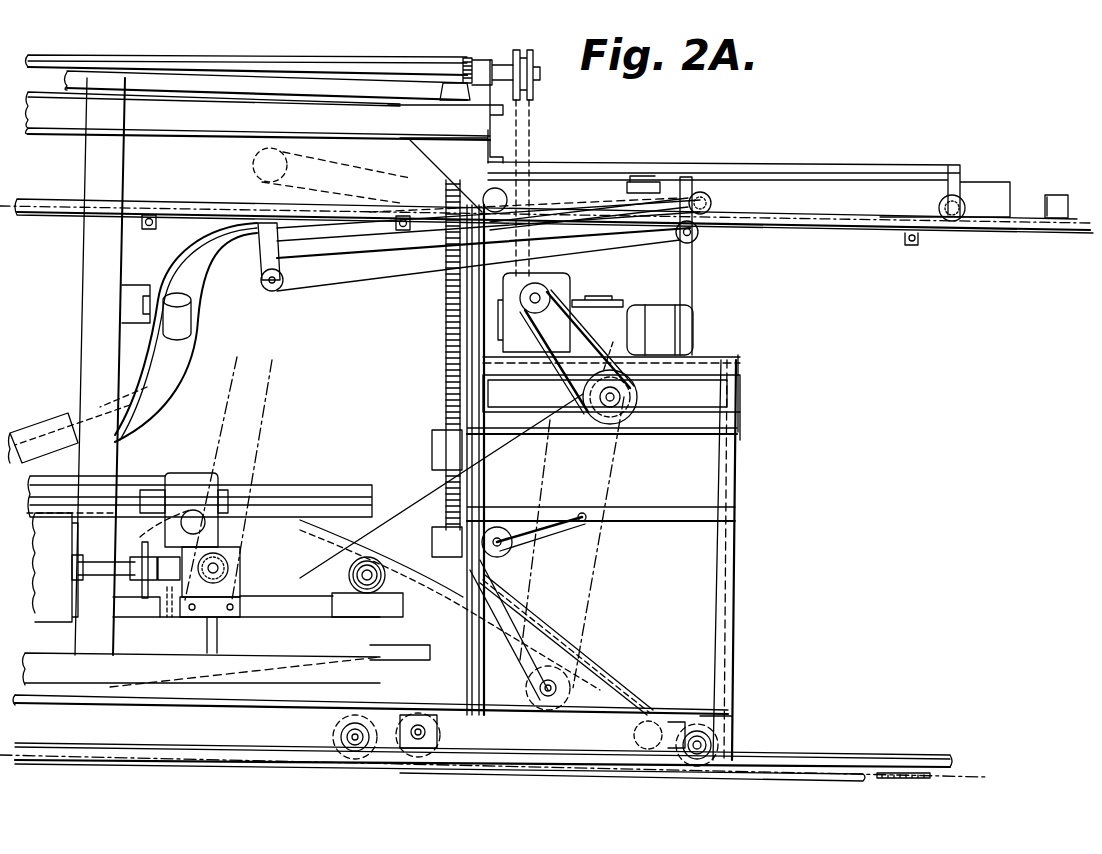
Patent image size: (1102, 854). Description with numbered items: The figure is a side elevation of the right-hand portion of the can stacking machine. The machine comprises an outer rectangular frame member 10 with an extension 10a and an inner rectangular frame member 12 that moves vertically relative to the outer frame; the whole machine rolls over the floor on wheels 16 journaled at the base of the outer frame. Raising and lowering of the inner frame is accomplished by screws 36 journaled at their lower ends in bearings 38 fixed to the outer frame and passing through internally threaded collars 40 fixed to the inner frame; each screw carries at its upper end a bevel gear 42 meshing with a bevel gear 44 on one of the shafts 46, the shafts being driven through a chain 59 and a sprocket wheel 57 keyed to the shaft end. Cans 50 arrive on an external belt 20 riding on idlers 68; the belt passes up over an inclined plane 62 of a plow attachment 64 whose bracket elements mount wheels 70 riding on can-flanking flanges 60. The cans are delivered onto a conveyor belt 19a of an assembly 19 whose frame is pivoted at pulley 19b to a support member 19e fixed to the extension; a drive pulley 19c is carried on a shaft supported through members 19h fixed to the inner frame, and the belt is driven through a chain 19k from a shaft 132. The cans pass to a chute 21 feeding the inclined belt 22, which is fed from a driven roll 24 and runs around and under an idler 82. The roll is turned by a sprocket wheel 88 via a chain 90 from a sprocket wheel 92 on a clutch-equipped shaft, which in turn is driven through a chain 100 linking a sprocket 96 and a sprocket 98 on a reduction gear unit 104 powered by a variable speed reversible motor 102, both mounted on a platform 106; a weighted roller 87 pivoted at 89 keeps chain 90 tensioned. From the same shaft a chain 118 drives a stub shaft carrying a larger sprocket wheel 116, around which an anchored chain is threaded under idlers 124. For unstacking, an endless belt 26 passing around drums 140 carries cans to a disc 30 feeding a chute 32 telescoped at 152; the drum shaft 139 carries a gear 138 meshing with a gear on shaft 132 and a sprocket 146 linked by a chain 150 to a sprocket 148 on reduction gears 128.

The outer rectangular frame member 10 is at (484, 514).
The extension 10a is at (640, 428).
The inner rectangular frame member 12 is at (85, 305).
The wheels 16 is at (455, 732).
The conveyor assembly 19 is at (612, 205).
The conveyor belt 19a is at (332, 288).
The pulley 19b is at (718, 243).
The drive pulley 19c is at (266, 290).
The support member 19e is at (694, 286).
The support members 19h is at (126, 285).
The chain 19k is at (275, 378).
The belt 20 is at (290, 211).
The chute 21 is at (122, 322).
The inclined belt 22 is at (166, 680).
The roll 24 is at (342, 570).
The endless belt 26 is at (45, 562).
The disc 30 is at (255, 485).
The chute 32 is at (600, 680).
The screws 36 is at (444, 393).
The bearings 38 is at (432, 545).
The internally threaded collars 40 is at (432, 445).
The bevel gear 42 is at (445, 136).
The bevel gear 44 is at (463, 60).
The shafts 46 is at (207, 62).
The cans 50 is at (1057, 195).
The sprocket wheel 57 is at (524, 50).
The chain 59 is at (530, 118).
The can-flanking flanges 60 is at (1025, 225).
The inclined plane 62 is at (546, 227).
The plow attachment 64 is at (790, 166).
The idlers 68 is at (157, 228).
The wheels 70 is at (711, 201).
The idler 82 is at (405, 645).
The weighted roller 87 is at (500, 557).
The sprocket wheel 88 is at (346, 580).
The pivot 89 is at (597, 510).
The chain 90 is at (440, 512).
The sprocket wheel 92 is at (638, 397).
The sprocket 96 is at (612, 350).
The sprocket 98 is at (550, 303).
The chain 100 is at (566, 386).
The variable speed reversible motor 102 is at (652, 305).
The reduction gear unit 104 is at (580, 287).
The platform 106 is at (714, 358).
The second larger sprocket wheel 116 is at (535, 628).
The chain 118 is at (597, 541).
The idlers 124 is at (332, 735).
The reduction gears 128 is at (185, 472).
The shaft 132 is at (240, 562).
The gear 138 is at (240, 598).
The shaft 139 is at (102, 577).
The drums 140 is at (78, 600).
The sprocket 146 is at (145, 592).
The sprocket 148 is at (152, 488).
The chain 150 is at (192, 511).
The telescoped joint 152 is at (540, 600).